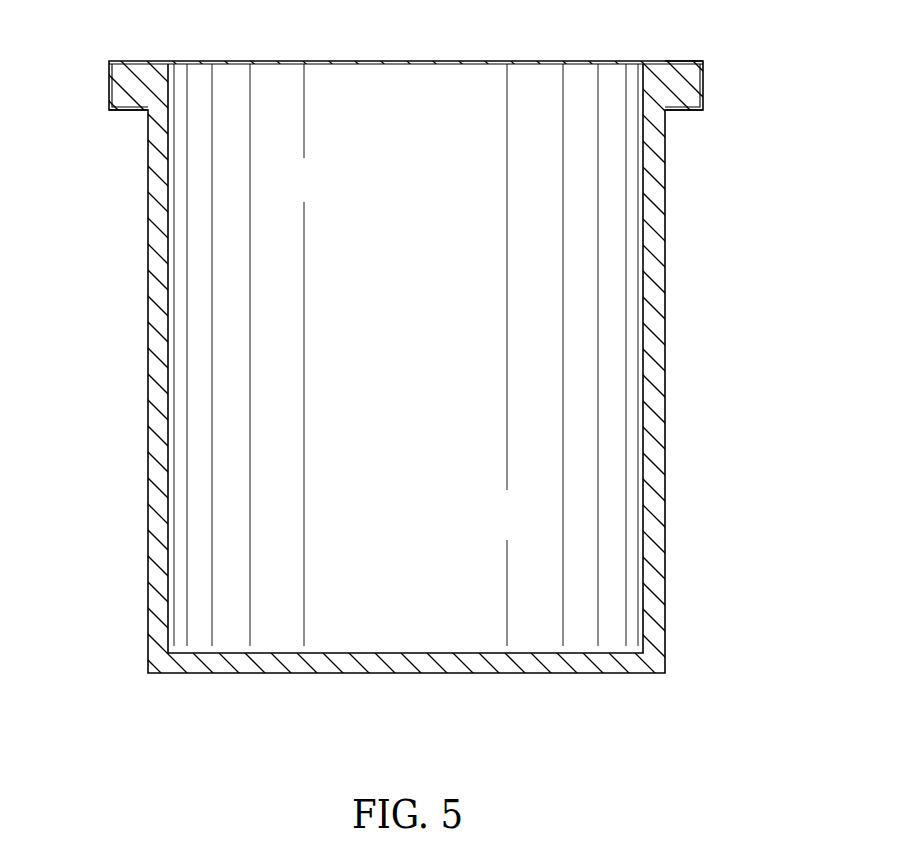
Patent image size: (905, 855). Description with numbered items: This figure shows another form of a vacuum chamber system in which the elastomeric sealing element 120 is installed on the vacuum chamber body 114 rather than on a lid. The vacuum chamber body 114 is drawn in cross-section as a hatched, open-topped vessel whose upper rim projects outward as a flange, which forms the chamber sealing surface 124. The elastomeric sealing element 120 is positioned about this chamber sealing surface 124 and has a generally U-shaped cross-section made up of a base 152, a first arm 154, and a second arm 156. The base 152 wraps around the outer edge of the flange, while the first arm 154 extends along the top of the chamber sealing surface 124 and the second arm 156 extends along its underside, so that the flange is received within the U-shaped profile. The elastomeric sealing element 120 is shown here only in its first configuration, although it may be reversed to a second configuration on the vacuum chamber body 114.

The vacuum chamber body 114 is at (665, 391).
The elastomeric sealing element 120 is at (693, 61).
The chamber sealing surface 124 is at (682, 85).
The base 152 is at (111, 88).
The first arm 154 is at (132, 61).
The second arm 156 is at (128, 111).